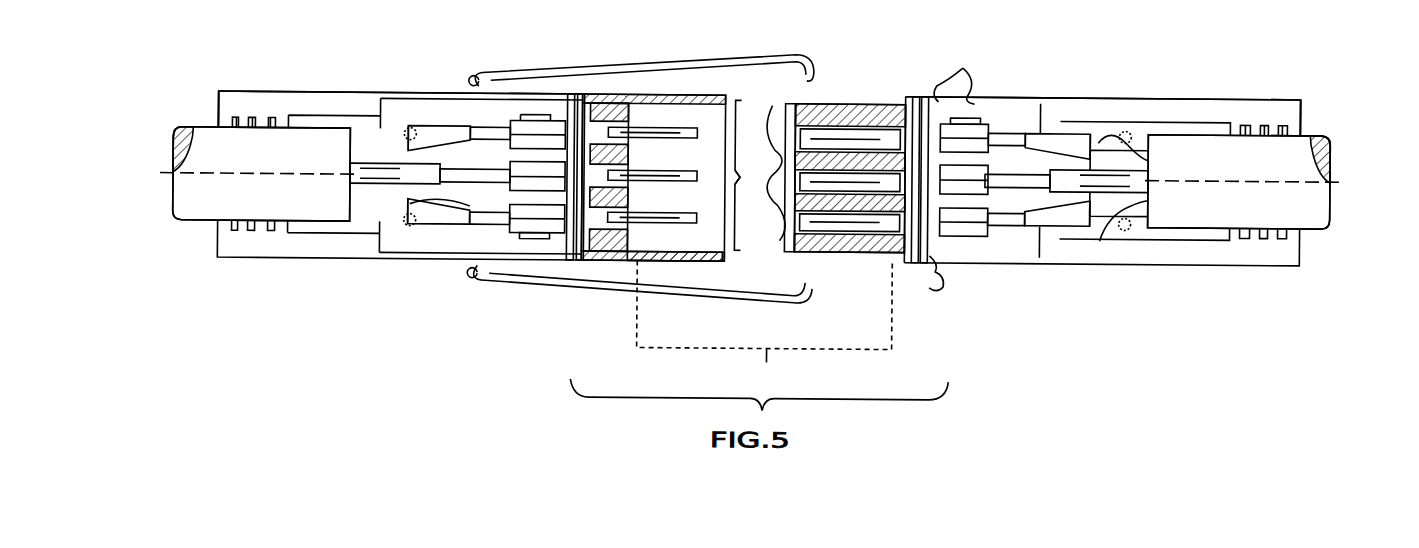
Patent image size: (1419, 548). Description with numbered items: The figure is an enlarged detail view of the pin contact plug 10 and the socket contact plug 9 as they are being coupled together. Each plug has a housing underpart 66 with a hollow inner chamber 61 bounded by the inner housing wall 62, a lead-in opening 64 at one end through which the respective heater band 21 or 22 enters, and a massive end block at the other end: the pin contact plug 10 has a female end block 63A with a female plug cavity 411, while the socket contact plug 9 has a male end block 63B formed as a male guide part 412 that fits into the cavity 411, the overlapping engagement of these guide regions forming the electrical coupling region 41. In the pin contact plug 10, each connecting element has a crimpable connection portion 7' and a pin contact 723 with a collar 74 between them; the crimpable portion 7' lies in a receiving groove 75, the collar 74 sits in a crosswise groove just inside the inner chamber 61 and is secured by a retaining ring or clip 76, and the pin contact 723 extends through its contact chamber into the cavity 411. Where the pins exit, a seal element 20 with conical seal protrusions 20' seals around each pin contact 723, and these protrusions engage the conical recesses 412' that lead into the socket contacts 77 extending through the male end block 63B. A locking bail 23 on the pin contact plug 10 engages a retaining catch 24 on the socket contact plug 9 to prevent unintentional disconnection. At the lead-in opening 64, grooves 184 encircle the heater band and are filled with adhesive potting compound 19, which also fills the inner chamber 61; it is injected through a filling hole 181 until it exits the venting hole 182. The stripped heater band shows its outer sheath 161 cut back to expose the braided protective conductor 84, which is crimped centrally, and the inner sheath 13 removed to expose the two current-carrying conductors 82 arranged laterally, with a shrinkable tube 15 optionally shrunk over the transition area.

The socket contact plug 9 is at (1152, 346).
The pin contact plug 10 is at (333, 330).
The inner sheath 13 is at (352, 180).
The shrinkable tube 15 is at (365, 188).
The adhesive potting compound 19 is at (268, 226).
The seal element 20 is at (660, 124).
The conical seal protrusion 20' is at (702, 263).
The first heater band 21 is at (284, 196).
The second heater band 22 is at (1286, 204).
The locking bail 23 is at (752, 60).
The retaining catch 24 is at (962, 70).
The electrical coupling region 41 is at (759, 336).
The hollow inner chamber 61 is at (297, 118).
The inner housing wall 62 is at (447, 262).
The female end block 63A is at (692, 262).
The male end block 63B is at (852, 240).
The lead-in opening 64 is at (214, 128).
The housing underpart 66 is at (346, 258).
The tying band or collar 74 is at (574, 110).
The receiving groove 75 is at (584, 300).
The retaining ring or clip 76 is at (548, 186).
The socket contact 77 is at (900, 125).
The crimpable connection portion 7' is at (738, 154).
The current-carrying conductor 82 is at (426, 150).
The braided protective conductor 84 is at (466, 168).
The outer sheath 161 is at (190, 206).
The filling hole 181 is at (412, 230).
The venting hole 182 is at (408, 130).
The lateral recess or groove 184 is at (268, 236).
The female plug cavity 411 is at (744, 188).
The male guide part 412 is at (755, 164).
The conical recess 412' is at (757, 172).
The pin contact 723 is at (600, 250).